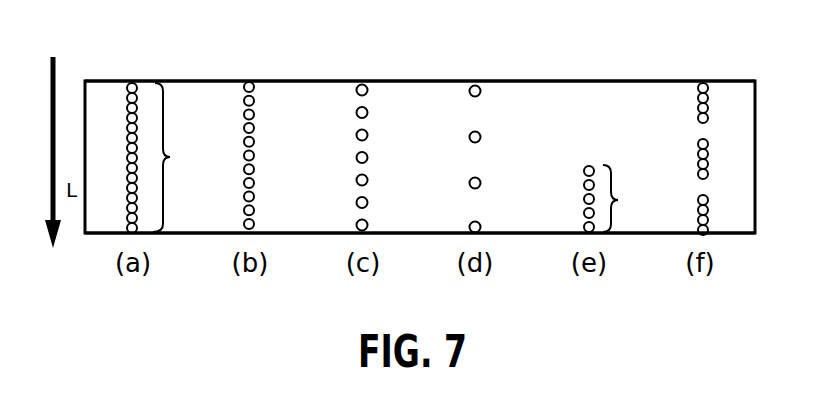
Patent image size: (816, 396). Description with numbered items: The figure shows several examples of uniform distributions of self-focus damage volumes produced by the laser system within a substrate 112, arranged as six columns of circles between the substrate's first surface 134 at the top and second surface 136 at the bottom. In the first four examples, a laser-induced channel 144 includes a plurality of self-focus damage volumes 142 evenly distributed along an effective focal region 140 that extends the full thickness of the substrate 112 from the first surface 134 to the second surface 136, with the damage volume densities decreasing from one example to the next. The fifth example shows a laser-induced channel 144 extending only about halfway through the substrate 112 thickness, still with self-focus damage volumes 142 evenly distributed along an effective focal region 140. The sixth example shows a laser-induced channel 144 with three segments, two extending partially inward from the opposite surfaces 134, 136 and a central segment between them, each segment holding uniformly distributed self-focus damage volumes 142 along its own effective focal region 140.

The substrate 112 is at (732, 97).
The first surface 134 is at (413, 81).
The second surface 136 is at (742, 233).
The effective focal region 140 is at (413, 157).
The self-focus damage volumes 142 is at (471, 142).
The laser-induced channel 144 is at (349, 123).